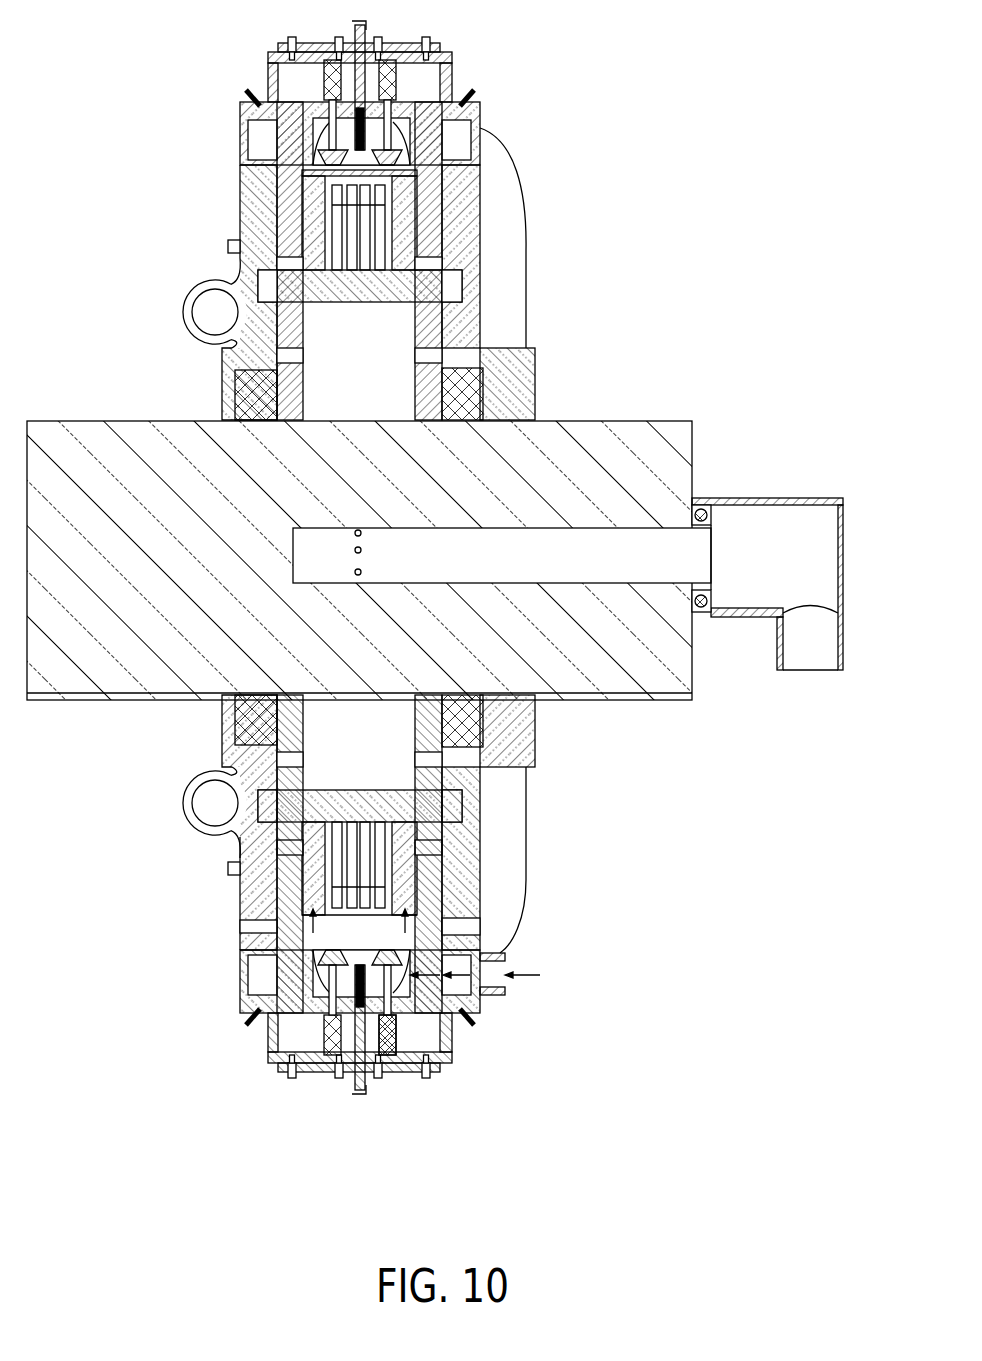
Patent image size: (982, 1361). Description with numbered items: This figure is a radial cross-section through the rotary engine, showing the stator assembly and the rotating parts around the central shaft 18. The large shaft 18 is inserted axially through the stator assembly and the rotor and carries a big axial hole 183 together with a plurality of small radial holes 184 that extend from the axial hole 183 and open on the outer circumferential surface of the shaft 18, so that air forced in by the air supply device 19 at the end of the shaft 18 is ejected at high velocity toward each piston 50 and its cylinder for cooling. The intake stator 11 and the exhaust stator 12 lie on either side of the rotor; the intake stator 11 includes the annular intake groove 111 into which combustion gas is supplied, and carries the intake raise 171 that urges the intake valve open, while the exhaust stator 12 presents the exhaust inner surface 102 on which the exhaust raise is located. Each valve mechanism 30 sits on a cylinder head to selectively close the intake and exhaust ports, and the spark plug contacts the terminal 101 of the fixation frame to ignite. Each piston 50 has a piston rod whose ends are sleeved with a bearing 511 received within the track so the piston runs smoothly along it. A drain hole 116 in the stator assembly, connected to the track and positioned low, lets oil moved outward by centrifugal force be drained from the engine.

The intake stator 11 is at (458, 183).
The exhaust stator 12 is at (258, 217).
The shaft 18 is at (597, 440).
The air supply device 19 is at (807, 655).
The valve mechanism 30 is at (305, 1038).
The piston 50 is at (460, 232).
The terminal 101 is at (360, 110).
The exhaust inner surface 102 is at (305, 1053).
The annular intake groove 111 is at (415, 993).
The drain hole 116 is at (248, 927).
The intake raise 171 is at (410, 1047).
The axial hole 183 is at (628, 562).
The radial holes 184 is at (358, 550).
The bearing 511 is at (250, 828).